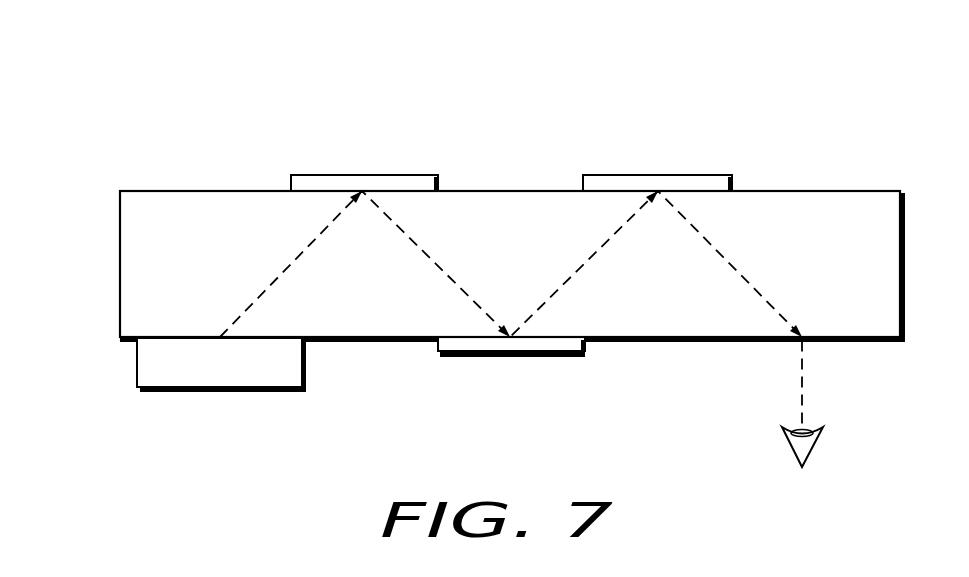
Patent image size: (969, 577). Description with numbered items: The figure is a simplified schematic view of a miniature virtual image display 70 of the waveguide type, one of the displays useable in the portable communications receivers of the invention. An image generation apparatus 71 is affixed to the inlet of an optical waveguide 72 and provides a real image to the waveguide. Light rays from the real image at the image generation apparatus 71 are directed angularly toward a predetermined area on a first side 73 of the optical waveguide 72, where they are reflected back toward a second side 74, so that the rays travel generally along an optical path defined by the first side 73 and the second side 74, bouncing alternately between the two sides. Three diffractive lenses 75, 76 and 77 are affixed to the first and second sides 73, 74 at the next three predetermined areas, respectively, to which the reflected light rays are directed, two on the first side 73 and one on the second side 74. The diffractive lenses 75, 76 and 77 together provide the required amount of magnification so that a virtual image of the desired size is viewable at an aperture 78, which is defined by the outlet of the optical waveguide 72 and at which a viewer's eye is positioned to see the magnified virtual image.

The miniature virtual image display 70 is at (567, 117).
The image generation apparatus 71 is at (198, 380).
The optical waveguide 72 is at (133, 235).
The first side 73 is at (186, 200).
The second side 74 is at (313, 338).
The diffractive lens 75 is at (345, 181).
The diffractive lens 76 is at (542, 350).
The diffractive lens 77 is at (648, 181).
The aperture 78 is at (835, 343).